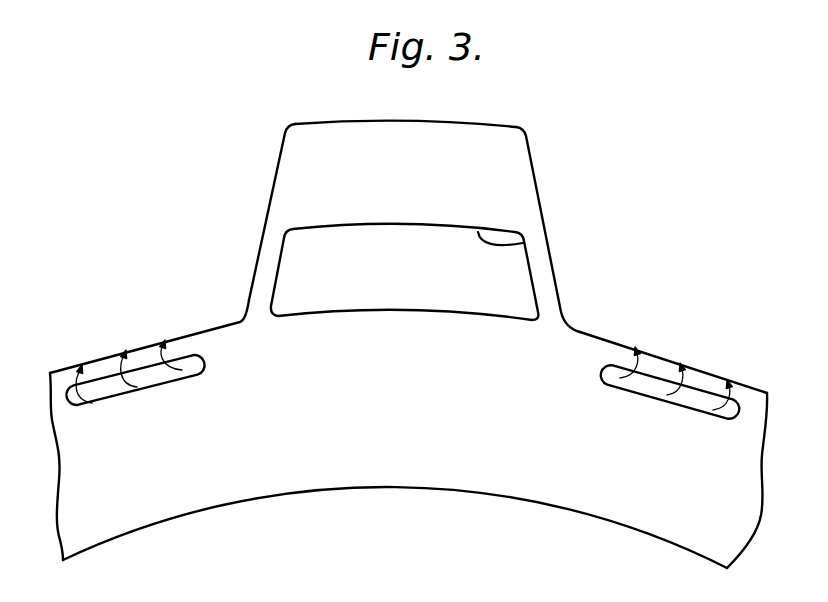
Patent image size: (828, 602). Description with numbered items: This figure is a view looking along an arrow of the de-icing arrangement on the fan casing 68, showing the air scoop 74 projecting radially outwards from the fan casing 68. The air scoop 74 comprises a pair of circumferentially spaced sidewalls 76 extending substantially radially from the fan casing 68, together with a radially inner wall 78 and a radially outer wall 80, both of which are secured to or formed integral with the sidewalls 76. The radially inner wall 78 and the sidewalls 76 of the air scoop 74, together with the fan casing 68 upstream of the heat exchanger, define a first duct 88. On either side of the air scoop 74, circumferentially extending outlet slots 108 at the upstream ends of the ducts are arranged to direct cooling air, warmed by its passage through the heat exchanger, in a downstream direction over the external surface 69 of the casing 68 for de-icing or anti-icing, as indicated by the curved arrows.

The fan casing 68 is at (408, 434).
The outer surface of the fan casing 69 is at (655, 358).
The air scoop 74 is at (403, 206).
The sidewalls 76 is at (257, 287).
The radially inner wall 78 is at (527, 247).
The radially outer wall 80 is at (470, 138).
The first duct 88 is at (293, 260).
The outlet slots 108 is at (155, 370).